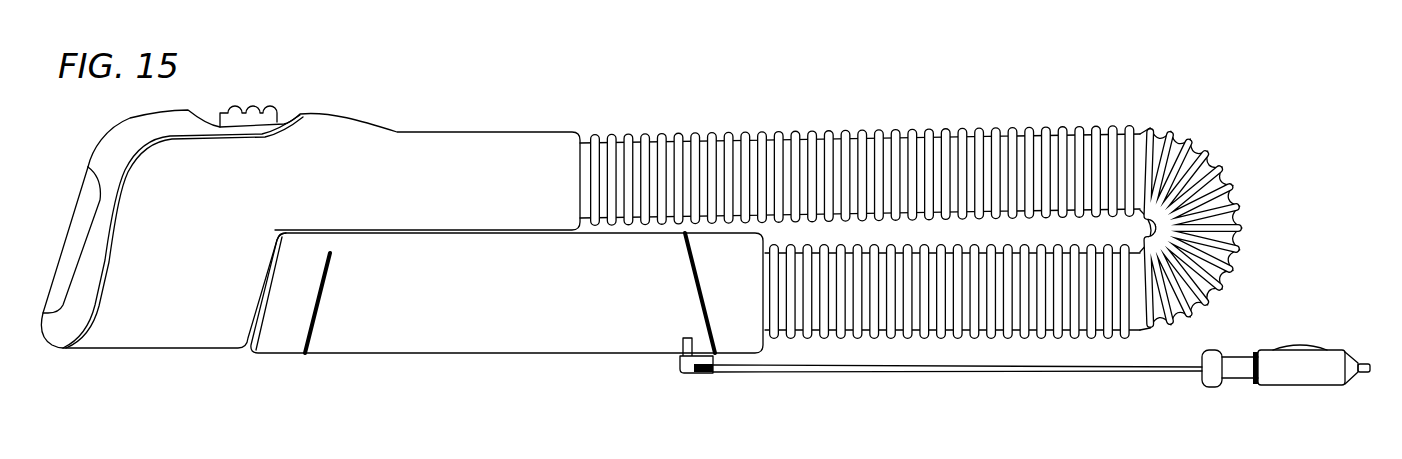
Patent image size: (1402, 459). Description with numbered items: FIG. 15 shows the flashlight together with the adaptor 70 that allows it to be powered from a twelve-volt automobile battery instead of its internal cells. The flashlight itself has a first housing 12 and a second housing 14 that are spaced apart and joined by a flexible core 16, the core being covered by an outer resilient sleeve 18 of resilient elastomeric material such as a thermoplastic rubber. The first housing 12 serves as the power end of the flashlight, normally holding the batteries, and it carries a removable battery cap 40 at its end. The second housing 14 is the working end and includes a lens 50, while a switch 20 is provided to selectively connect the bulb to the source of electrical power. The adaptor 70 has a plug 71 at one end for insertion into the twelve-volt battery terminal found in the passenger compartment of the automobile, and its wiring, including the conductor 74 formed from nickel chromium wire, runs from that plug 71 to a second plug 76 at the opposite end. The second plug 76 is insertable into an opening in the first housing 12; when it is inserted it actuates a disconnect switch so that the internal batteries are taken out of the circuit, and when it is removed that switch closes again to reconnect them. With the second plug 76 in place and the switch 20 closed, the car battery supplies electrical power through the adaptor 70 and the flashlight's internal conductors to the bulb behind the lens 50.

The first housing 12 is at (505, 353).
The second housing 14 is at (342, 133).
The flexible core 16 is at (911, 193).
The outer resilient sleeve 18 is at (1170, 135).
The switch 20 is at (252, 110).
The removable battery cap 40 is at (272, 335).
The lens 50 is at (78, 212).
The adaptor 70 is at (1274, 377).
The plug 71 is at (1323, 365).
The conductor 74 is at (1178, 365).
The second plug 76 is at (680, 360).